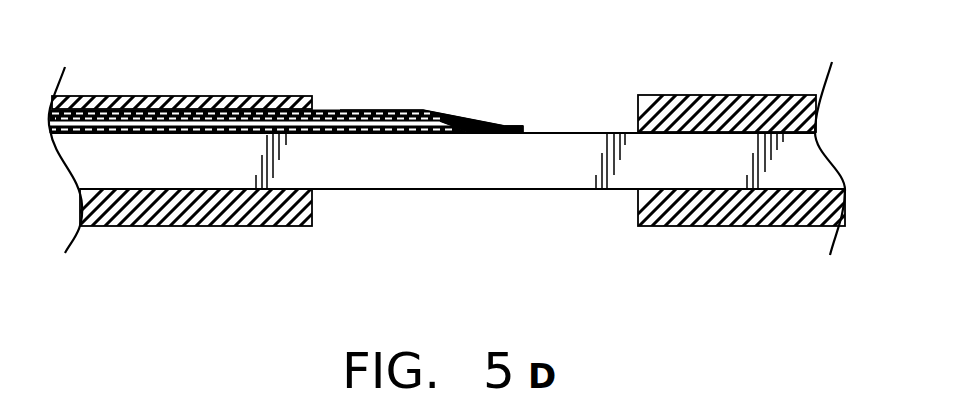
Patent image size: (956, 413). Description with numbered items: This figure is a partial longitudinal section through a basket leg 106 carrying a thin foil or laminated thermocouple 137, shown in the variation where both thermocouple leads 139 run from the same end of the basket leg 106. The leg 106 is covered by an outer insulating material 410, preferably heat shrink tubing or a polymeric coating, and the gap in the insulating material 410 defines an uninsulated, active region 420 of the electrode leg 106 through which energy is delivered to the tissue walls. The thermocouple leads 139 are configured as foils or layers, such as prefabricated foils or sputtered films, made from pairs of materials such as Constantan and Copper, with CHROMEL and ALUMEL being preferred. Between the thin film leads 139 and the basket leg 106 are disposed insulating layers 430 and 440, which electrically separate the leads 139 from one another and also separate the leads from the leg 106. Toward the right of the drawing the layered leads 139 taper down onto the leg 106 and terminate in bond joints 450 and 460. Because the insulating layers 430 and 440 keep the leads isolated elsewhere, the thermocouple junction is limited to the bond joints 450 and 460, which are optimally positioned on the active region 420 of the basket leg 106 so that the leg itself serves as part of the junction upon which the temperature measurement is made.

The basket leg 106 is at (358, 190).
The thermocouple 137 is at (199, 127).
The thermocouple leads 139 is at (358, 110).
The insulating material 410 is at (262, 96).
The active region 420 is at (583, 189).
The insulating layer 430 is at (108, 116).
The insulating layer 440 is at (145, 133).
The bond joint 450 is at (448, 128).
The bond joint 460 is at (512, 130).